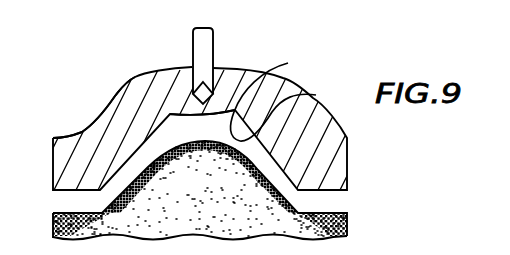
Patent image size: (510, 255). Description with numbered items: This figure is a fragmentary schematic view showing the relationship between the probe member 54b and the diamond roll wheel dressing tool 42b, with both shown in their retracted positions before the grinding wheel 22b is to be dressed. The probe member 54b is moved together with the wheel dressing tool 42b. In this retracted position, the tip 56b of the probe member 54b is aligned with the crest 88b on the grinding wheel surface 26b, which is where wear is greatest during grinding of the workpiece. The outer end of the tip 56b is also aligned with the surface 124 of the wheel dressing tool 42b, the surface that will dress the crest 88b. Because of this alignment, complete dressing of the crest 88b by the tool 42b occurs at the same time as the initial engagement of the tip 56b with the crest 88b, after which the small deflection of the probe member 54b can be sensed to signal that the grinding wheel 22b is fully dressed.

The grinding wheel 22b is at (348, 228).
The grinding wheel surface 26b is at (347, 169).
The diamond roll wheel dressing tool 42b is at (83, 134).
The probe member 54b is at (201, 53).
The tip of the probe member 56b is at (281, 98).
The crest 88b is at (192, 138).
The surface of the wheel dressing tool 124 is at (298, 114).